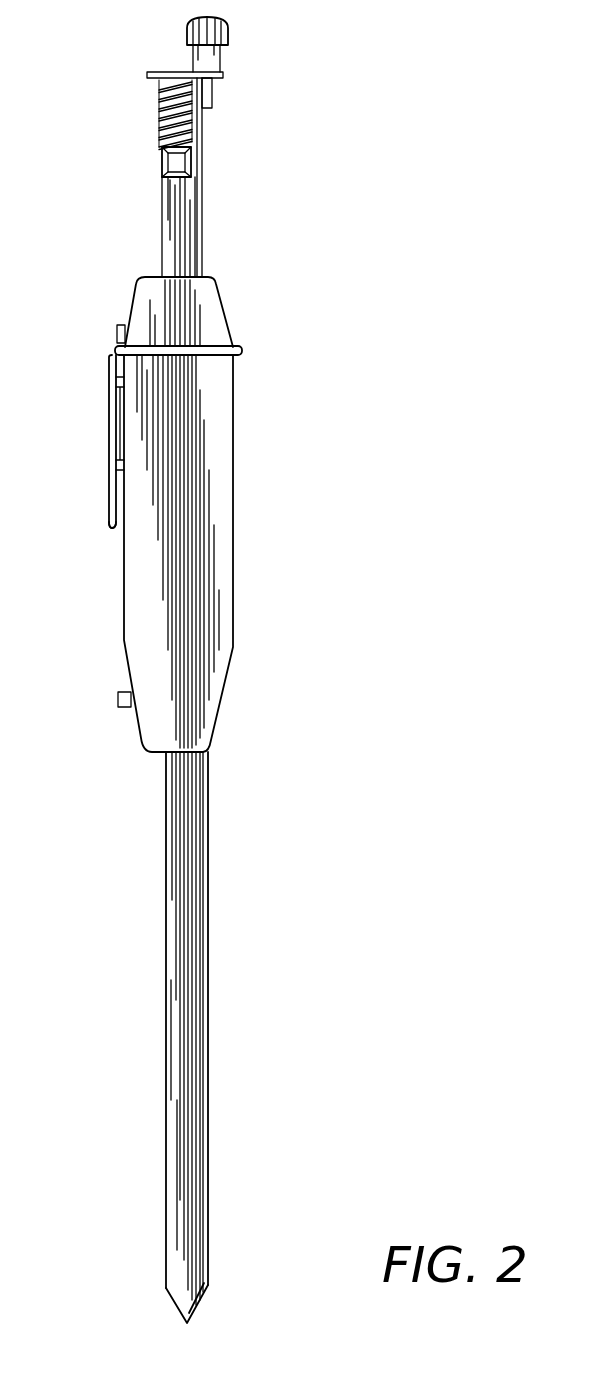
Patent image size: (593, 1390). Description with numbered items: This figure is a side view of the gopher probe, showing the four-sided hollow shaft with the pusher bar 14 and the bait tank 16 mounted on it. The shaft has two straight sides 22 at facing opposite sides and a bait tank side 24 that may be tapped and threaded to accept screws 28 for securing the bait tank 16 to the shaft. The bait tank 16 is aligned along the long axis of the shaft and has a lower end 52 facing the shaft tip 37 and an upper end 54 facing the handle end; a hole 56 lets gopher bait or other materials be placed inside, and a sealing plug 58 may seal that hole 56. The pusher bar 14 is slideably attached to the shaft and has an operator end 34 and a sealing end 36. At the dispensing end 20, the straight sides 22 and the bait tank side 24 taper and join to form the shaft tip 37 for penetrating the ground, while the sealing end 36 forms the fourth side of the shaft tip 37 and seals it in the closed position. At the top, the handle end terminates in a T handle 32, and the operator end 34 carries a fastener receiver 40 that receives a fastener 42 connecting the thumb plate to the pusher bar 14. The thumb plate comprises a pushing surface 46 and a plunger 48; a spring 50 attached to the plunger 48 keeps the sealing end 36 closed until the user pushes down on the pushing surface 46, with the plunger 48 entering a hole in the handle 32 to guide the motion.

The pusher bar 14 is at (208, 1004).
The bait tank 16 is at (250, 483).
The dispensing end 20 is at (167, 1287).
The straight sides 22 is at (172, 1173).
The bait tank side 24 is at (166, 1007).
The screws 28 is at (117, 333).
The "T" handle 32 is at (162, 164).
The operator end 34 is at (203, 128).
The sealing end 36 is at (200, 1308).
The shaft tip 37 is at (166, 1313).
The fastener receiver 40 is at (213, 95).
The fastener 42 is at (226, 23).
The pushing surface 46 is at (166, 72).
The plunger 48 is at (160, 137).
The spring 50 is at (161, 102).
The lower end 52 is at (213, 730).
The upper end 54 is at (228, 288).
The hole 56 is at (112, 395).
The sealing plug 58 is at (109, 518).